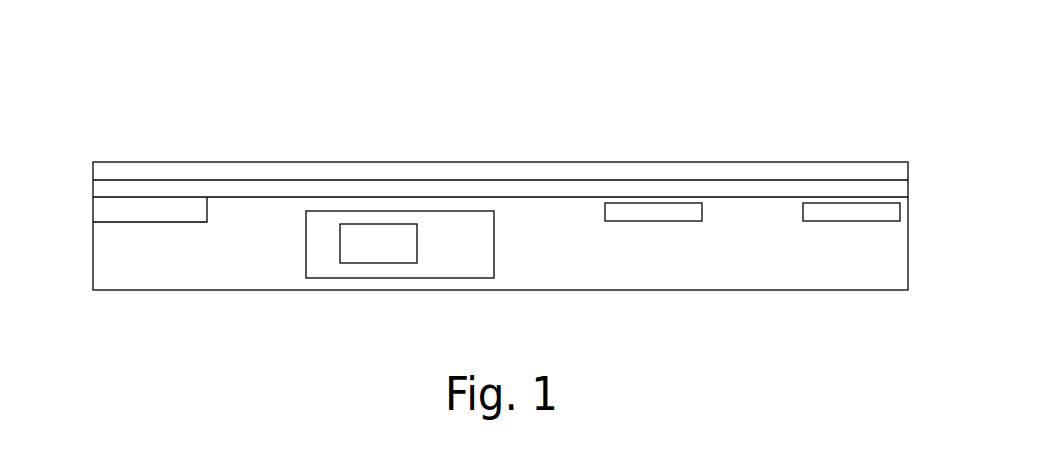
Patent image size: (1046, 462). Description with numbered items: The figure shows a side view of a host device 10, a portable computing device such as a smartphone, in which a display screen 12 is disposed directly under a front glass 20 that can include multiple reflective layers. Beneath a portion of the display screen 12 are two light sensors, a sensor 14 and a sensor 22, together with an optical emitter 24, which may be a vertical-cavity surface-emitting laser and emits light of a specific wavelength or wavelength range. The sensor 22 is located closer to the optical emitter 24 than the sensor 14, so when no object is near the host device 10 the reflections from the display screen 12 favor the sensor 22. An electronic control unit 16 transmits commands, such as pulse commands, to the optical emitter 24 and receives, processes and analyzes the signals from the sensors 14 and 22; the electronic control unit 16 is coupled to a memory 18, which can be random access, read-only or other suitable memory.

The host device 10 is at (862, 124).
The display screen 12 is at (900, 189).
The sensor 14 is at (138, 213).
The electronic control unit 16 is at (483, 257).
The memory 18 is at (377, 252).
The front glass 20 is at (787, 168).
The sensor 22 is at (642, 212).
The optical emitter 24 is at (838, 212).